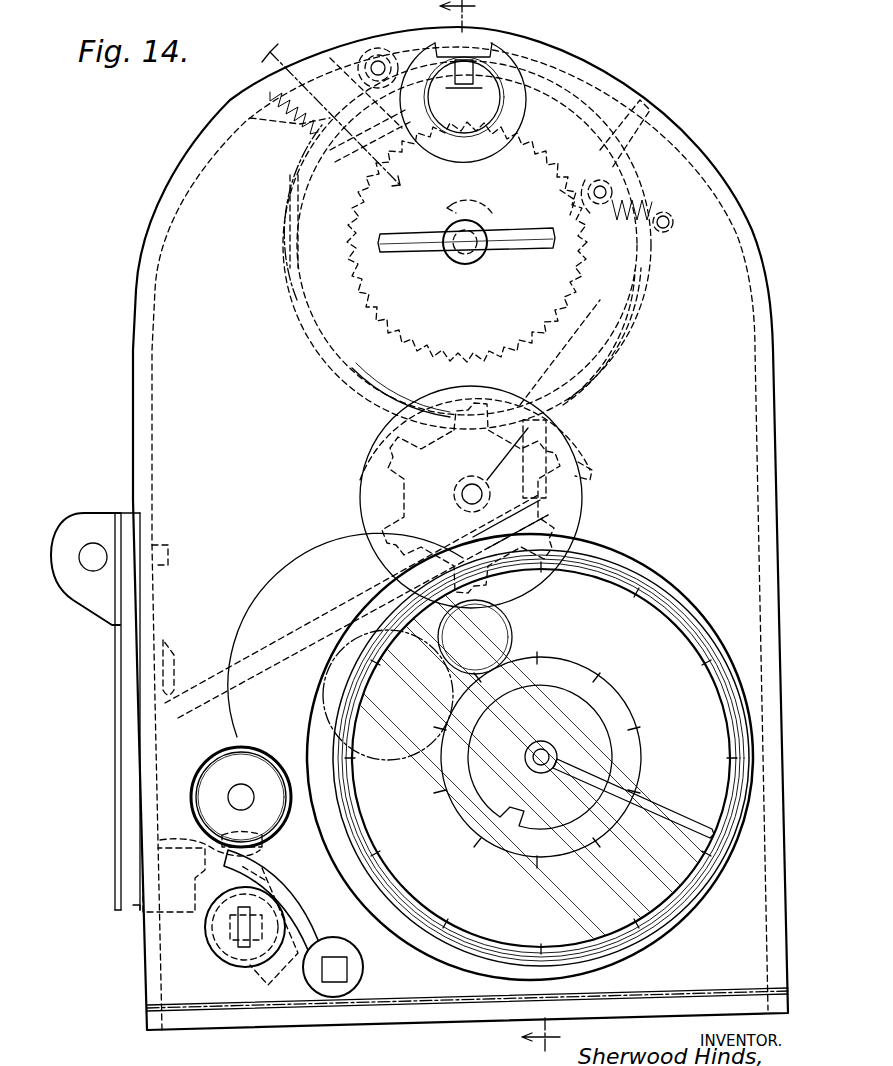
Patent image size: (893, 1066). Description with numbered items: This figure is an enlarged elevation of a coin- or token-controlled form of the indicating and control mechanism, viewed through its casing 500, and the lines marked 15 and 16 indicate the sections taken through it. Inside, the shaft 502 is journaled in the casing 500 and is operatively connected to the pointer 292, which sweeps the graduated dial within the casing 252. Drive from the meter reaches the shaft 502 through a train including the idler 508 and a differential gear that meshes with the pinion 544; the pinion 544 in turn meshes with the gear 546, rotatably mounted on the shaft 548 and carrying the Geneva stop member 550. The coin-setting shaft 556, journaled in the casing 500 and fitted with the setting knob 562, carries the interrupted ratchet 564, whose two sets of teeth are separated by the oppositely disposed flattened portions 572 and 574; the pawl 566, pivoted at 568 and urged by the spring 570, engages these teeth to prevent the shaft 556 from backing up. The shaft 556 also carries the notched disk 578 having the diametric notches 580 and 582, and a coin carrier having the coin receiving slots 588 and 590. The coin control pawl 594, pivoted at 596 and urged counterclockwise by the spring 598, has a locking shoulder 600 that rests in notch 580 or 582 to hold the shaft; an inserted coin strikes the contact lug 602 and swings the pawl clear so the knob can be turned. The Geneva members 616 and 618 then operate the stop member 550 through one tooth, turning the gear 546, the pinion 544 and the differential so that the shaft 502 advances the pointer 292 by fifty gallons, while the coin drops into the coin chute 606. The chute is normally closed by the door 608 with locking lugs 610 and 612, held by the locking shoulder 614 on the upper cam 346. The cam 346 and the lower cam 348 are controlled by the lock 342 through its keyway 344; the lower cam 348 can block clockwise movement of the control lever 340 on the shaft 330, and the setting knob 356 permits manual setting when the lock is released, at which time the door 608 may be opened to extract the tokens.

The section line 15- 15 is at (500, 533).
The section line 16- 16 is at (331, 116).
The casing 252 is at (530, 757).
The pointer 292 is at (633, 798).
The shaft 330 is at (358, 967).
The control lever 340 is at (278, 900).
The lock 342 is at (174, 927).
The keyway 344 is at (185, 927).
The upper cam 346 is at (265, 855).
The lower cam 348 is at (256, 963).
The setting knob 356 is at (241, 778).
The casing 500 is at (436, 528).
The shaft 502 is at (544, 735).
The idler 508 is at (540, 723).
The pinion 544 is at (540, 735).
The gear 546 is at (502, 497).
The shaft 548 is at (472, 476).
The Geneva stop member 550 is at (546, 560).
The shaft 556 is at (466, 251).
The setting knob 562 is at (488, 253).
The interrupted ratchet 564 is at (522, 242).
The pawl 566 is at (654, 123).
The pivot 568 is at (668, 178).
The spring 570 is at (715, 200).
The flattened portion 572 is at (539, 197).
The flattened portion 574 is at (452, 245).
The notched disk 578 is at (467, 245).
The notch 580 is at (431, 46).
The notch 582 is at (518, 342).
The coin receiving slot 588 is at (499, 91).
The coin receiving slot 590 is at (579, 352).
The coin control pawl 594 is at (345, 73).
The pivot 596 is at (365, 47).
The spring 598 is at (248, 113).
The locking shoulder 600 is at (269, 216).
The contact lug 602 is at (393, 147).
The coin chute 606 is at (557, 484).
The door 608 is at (95, 711).
The locking lug 610 is at (187, 651).
The locking lug 612 is at (106, 877).
The locking shoulder 614 is at (166, 863).
The Geneva member 616 is at (277, 228).
The Geneva member 618 is at (662, 152).